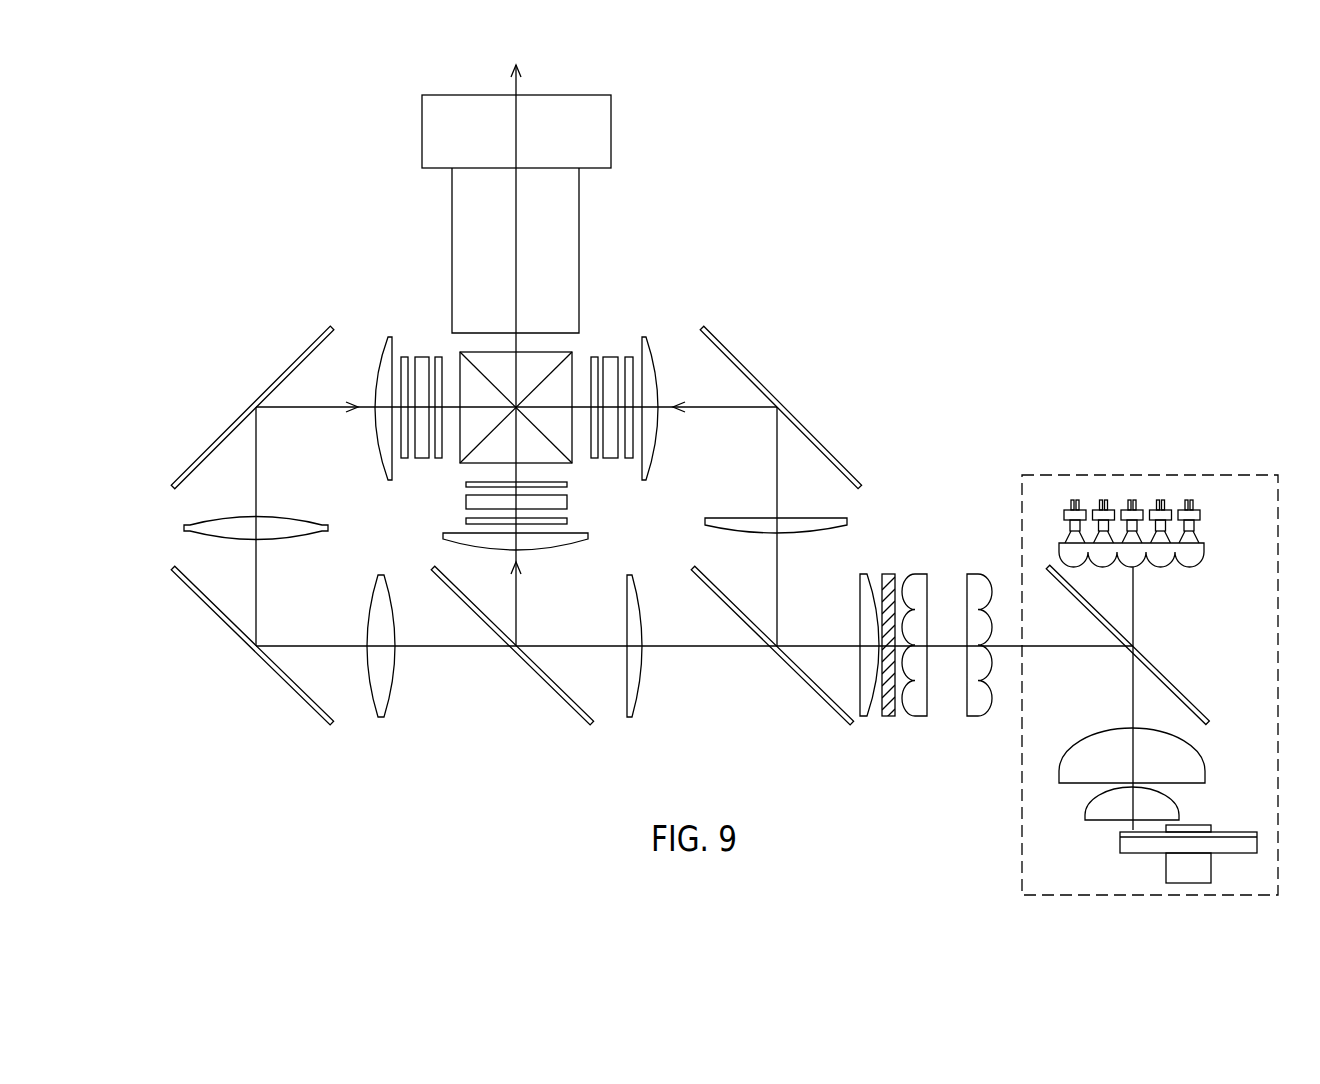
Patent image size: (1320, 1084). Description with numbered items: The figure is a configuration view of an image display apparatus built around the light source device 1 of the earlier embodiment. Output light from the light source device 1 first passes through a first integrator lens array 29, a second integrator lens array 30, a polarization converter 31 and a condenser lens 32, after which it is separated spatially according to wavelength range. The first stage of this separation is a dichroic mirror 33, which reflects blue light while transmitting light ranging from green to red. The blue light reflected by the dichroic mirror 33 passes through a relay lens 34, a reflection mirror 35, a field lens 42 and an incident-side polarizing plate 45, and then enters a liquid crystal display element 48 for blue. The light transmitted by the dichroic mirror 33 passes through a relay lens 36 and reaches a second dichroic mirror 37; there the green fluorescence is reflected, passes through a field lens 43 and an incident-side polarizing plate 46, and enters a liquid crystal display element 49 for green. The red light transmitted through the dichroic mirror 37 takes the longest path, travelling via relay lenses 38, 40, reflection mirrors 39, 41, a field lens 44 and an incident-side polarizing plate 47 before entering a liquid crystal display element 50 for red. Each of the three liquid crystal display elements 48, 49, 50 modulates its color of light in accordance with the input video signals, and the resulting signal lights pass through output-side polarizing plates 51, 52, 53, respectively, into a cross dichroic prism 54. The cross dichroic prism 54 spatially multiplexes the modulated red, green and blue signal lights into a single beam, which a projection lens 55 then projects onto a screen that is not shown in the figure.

The light source device 1 is at (1240, 475).
The first integrator lens array 29 is at (973, 716).
The second integrator lens array 30 is at (920, 716).
The polarization converter 31 is at (888, 716).
The condenser lens 32 is at (864, 716).
The dichroic mirror 33 is at (826, 703).
The relay lens 34 is at (847, 520).
The reflection mirror 35 is at (728, 353).
The relay lens 36 is at (631, 717).
The dichroic mirror 37 is at (566, 703).
The relay lens 38 is at (381, 717).
The reflection mirror 39 is at (306, 703).
The relay lens 40 is at (184, 528).
The reflection mirror 41 is at (307, 352).
The field lens 42 is at (653, 346).
The field lens 43 is at (560, 548).
The field lens 44 is at (380, 346).
The incident-side polarizing plate 45 is at (629, 357).
The incident-side polarizing plate 46 is at (567, 521).
The incident-side polarizing plate 47 is at (404, 357).
The liquid crystal display element 48 is at (610, 357).
The liquid crystal display element 49 is at (466, 502).
The liquid crystal display element 50 is at (421, 357).
The output-side polarizing plate 51 is at (594, 357).
The output-side polarizing plate 52 is at (567, 485).
The output-side polarizing plate 53 is at (438, 357).
The cross dichroic prism 54 is at (462, 459).
The projection lens 55 is at (611, 130).